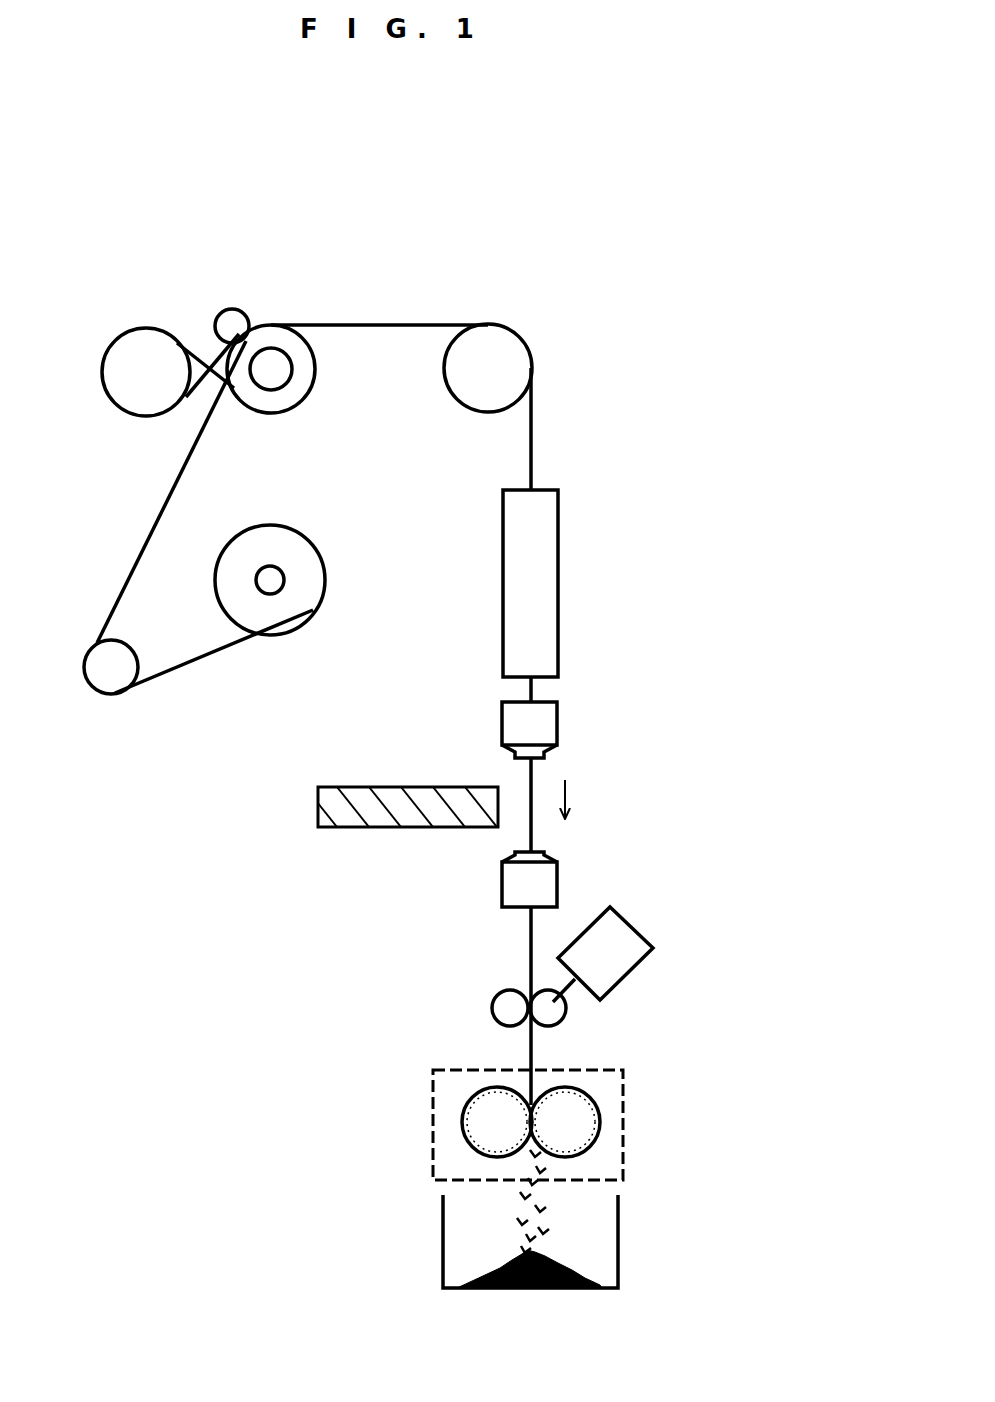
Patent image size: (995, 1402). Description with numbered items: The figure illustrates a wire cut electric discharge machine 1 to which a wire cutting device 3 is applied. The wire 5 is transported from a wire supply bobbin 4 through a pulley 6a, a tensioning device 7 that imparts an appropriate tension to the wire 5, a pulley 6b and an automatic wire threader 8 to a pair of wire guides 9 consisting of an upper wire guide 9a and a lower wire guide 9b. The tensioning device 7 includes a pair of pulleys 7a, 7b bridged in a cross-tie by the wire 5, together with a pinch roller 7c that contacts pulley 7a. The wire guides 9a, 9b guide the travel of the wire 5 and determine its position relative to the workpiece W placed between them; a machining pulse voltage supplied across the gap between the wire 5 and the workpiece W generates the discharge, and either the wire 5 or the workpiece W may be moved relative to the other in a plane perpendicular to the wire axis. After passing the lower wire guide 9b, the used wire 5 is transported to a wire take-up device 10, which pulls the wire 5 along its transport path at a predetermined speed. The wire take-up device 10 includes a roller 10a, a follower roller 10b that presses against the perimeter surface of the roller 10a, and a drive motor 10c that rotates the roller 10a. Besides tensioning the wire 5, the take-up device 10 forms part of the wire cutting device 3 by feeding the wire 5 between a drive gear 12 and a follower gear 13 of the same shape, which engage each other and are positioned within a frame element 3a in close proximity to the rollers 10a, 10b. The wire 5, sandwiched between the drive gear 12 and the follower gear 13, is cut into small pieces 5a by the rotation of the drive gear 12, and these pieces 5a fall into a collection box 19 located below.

The wire cut electric discharge machine 1 is at (630, 237).
The wire cutting device 3 is at (742, 1074).
The frame element 3a is at (623, 1092).
The wire supply bobbin 4 is at (316, 613).
The wire 5 is at (185, 670).
The small pieces 5a is at (540, 1210).
The pulley 6a is at (103, 680).
The pulley 6b is at (485, 358).
The tensioning device 7 is at (153, 262).
The pulley 7a is at (307, 395).
The pulley 7b is at (153, 360).
The pinch roller 7c is at (231, 320).
The automatic wire threader 8 is at (557, 638).
The wire guides 9 is at (677, 730).
The wire guide 9a is at (557, 723).
The lower wire guide 9b is at (557, 877).
The wire take-up device 10 is at (727, 939).
The roller 10a is at (563, 1022).
The follower roller 10b is at (500, 1008).
The drive motor 10c is at (613, 965).
The drive gear 12 is at (600, 1122).
The follower gear 13 is at (470, 1148).
The collection box 19 is at (618, 1235).
The workpiece W is at (397, 787).